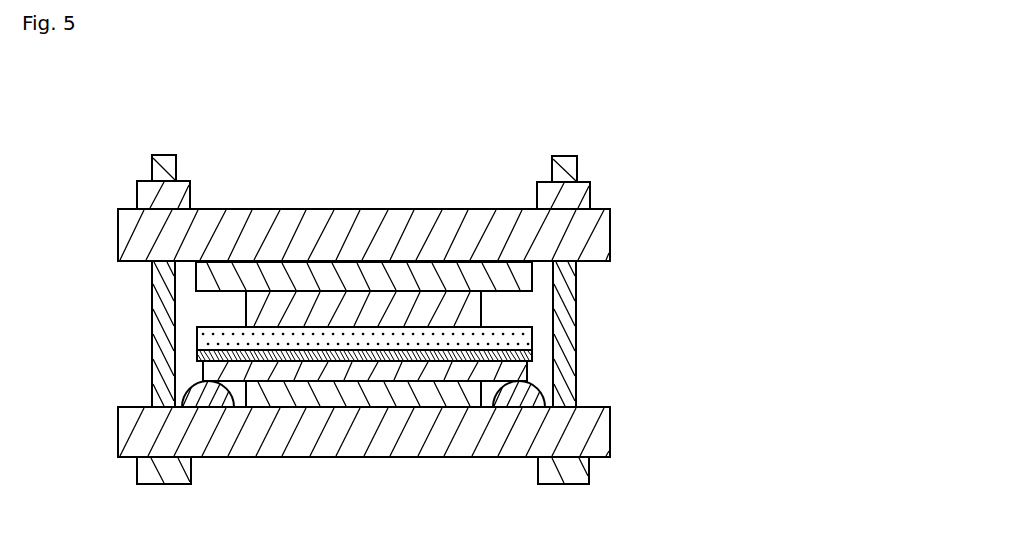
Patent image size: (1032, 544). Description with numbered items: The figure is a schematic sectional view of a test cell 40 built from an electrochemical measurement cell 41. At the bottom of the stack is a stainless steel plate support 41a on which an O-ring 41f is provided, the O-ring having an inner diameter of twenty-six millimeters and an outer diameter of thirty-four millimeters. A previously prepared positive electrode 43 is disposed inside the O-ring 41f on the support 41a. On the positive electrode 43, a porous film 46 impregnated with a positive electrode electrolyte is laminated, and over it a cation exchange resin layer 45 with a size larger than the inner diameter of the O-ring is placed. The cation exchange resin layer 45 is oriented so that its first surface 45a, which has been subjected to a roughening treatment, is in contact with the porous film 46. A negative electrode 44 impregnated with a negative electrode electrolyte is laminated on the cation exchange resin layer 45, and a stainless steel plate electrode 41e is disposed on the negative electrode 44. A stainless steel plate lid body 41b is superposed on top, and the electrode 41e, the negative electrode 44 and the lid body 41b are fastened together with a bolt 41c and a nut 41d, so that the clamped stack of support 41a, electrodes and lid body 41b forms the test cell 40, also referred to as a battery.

The test cell 40 is at (579, 137).
The electrochemical measurement cell 41 is at (610, 232).
The stainless steel plate support 41a is at (447, 450).
The stainless steel plate lid body 41b is at (345, 223).
The bolt 41c is at (163, 320).
The nut 41d is at (182, 200).
The stainless steel plate electrode 41e is at (510, 282).
The O-ring 41f is at (518, 397).
The positive electrode 43 is at (362, 395).
The negative electrode 44 is at (481, 310).
The cation exchange resin layer 45 is at (503, 342).
The first surface 45a is at (532, 350).
The porous film 46 is at (293, 400).